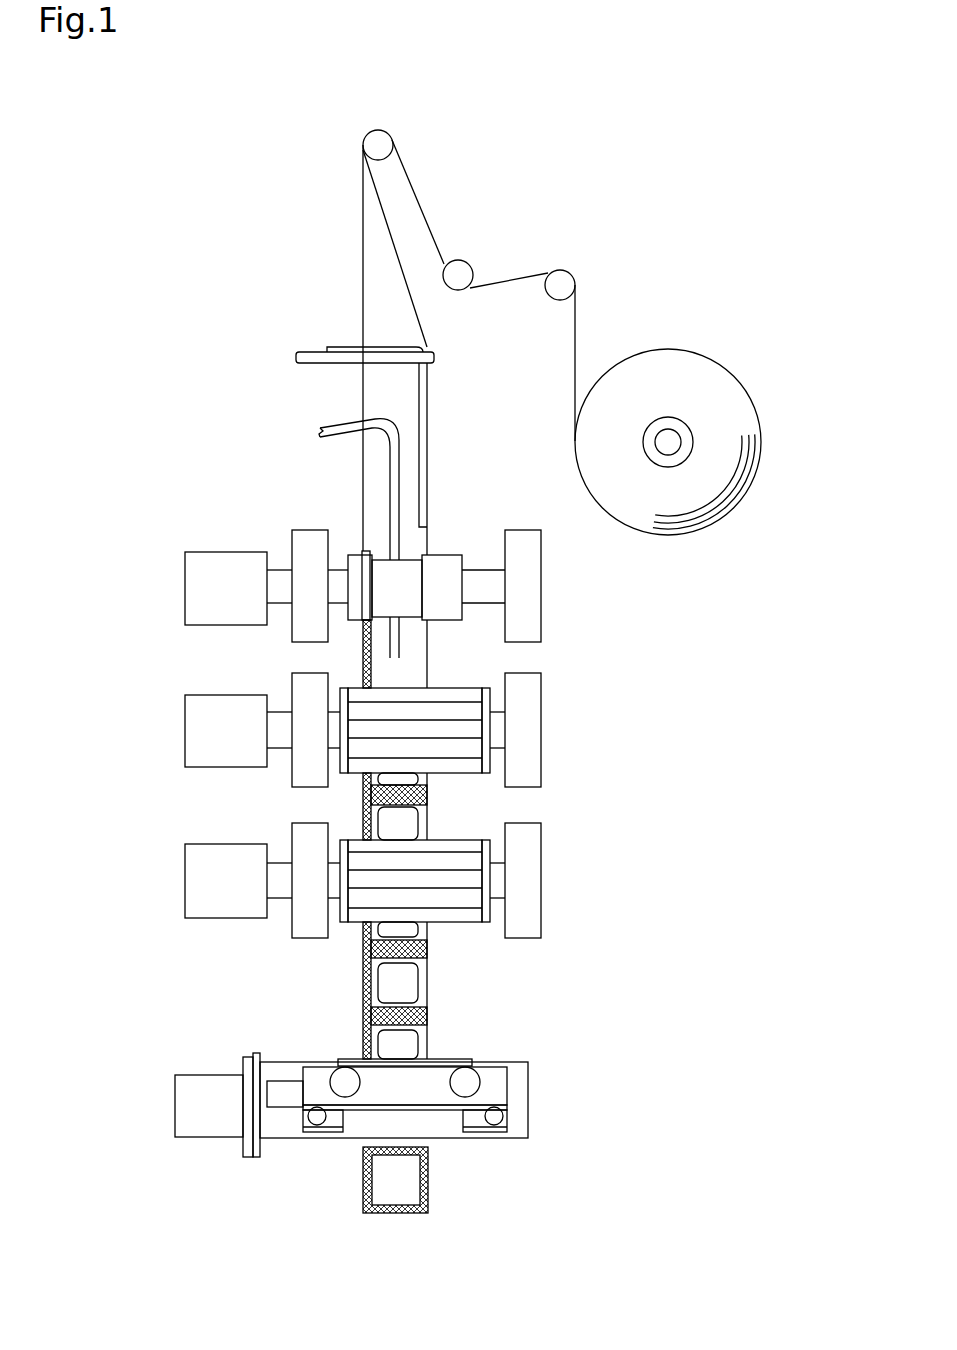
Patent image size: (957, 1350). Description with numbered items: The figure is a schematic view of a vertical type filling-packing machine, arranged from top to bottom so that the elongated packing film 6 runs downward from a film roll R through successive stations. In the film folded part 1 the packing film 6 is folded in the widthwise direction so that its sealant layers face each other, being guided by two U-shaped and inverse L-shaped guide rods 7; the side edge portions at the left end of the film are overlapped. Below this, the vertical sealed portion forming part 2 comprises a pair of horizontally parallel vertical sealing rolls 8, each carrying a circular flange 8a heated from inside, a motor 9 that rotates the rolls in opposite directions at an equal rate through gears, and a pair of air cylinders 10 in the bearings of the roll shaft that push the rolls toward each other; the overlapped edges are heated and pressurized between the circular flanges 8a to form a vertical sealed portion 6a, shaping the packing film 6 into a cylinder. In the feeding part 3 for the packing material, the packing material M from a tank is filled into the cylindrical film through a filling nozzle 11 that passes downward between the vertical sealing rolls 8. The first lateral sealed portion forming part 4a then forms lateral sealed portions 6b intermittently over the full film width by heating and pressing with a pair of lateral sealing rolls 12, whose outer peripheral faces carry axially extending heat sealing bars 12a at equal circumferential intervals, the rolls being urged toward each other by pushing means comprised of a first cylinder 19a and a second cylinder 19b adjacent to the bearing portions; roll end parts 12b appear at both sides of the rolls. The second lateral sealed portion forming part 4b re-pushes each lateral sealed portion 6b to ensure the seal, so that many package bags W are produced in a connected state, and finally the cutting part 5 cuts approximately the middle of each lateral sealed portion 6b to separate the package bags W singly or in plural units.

The film folded part 1 is at (466, 459).
The vertical sealed portion forming part 2 is at (425, 556).
The feeding part for the packing material 3 is at (413, 446).
The first lateral sealed portion forming part 4a is at (416, 742).
The second lateral sealed portion forming part 4b is at (560, 862).
The cutting part 5 is at (552, 1093).
The packing film 6 is at (358, 240).
The vertical sealed portion 6a is at (363, 653).
The lateral sealed portion 6b is at (427, 945).
The guide rods 7 is at (323, 350).
The vertical sealing rolls 8 is at (443, 553).
The circular flange 8a is at (367, 551).
The motor 9 is at (185, 568).
The air cylinders 10 is at (292, 538).
The filling nozzle 11 is at (390, 462).
The lateral sealing rolls 12 is at (442, 800).
The heat sealing bars 12a is at (476, 702).
The sealer flanges 12b is at (345, 775).
The first cylinder 19a is at (290, 773).
The second cylinder 19b is at (545, 738).
The packing material M is at (428, 778).
The package bags W is at (360, 988).
The film roll R is at (697, 350).